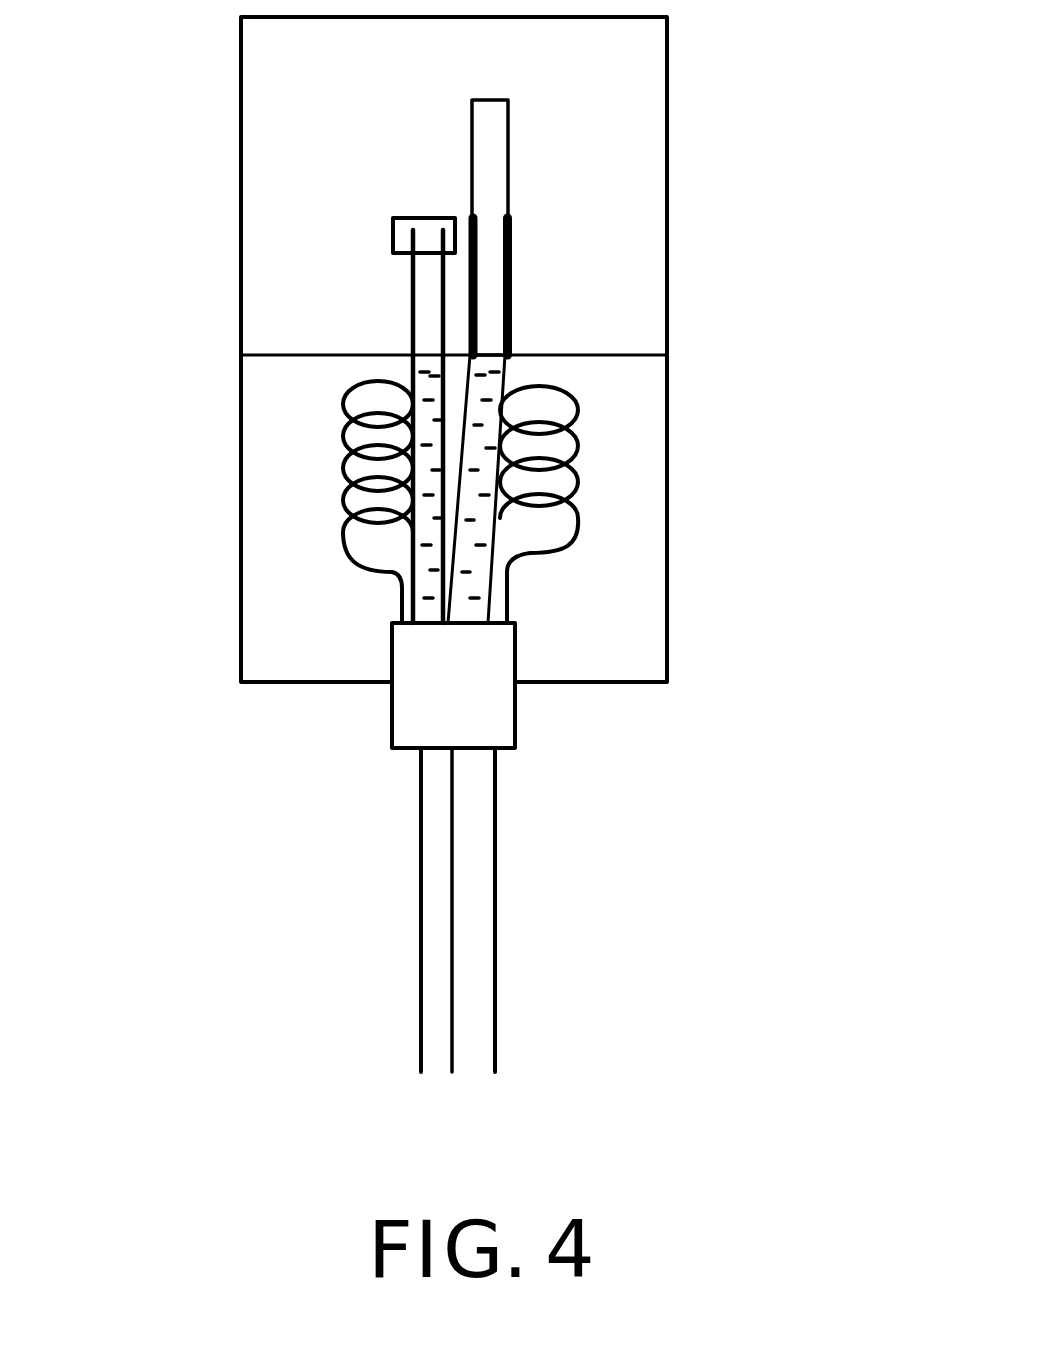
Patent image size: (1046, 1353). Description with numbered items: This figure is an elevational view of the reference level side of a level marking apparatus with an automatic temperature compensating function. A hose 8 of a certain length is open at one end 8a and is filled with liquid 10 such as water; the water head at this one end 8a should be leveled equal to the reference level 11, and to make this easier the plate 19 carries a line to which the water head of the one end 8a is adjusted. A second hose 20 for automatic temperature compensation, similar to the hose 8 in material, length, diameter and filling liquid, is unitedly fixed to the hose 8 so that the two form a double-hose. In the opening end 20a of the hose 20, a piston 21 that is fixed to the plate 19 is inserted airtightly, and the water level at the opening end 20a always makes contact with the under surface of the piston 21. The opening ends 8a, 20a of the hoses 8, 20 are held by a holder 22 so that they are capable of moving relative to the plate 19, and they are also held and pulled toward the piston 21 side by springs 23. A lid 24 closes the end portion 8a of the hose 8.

The plate 19 is at (668, 100).
The reference level 11 is at (290, 352).
The piston 21 is at (470, 163).
The opening end of the hose 20a is at (512, 268).
The lid 24 is at (420, 218).
The one end of the hose 8a is at (412, 300).
The liquid 10 is at (433, 583).
The springs 23 is at (345, 500).
The holder 22 is at (516, 718).
The hose 8 is at (421, 1005).
The hose for automatic temperature compensation 20 is at (497, 1005).